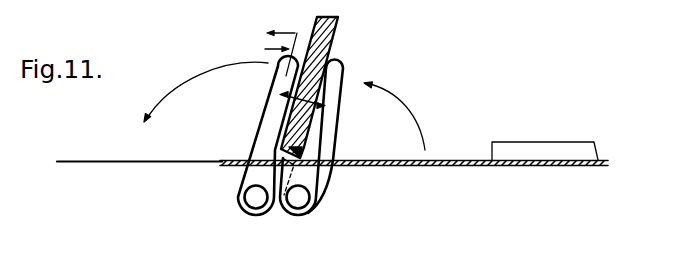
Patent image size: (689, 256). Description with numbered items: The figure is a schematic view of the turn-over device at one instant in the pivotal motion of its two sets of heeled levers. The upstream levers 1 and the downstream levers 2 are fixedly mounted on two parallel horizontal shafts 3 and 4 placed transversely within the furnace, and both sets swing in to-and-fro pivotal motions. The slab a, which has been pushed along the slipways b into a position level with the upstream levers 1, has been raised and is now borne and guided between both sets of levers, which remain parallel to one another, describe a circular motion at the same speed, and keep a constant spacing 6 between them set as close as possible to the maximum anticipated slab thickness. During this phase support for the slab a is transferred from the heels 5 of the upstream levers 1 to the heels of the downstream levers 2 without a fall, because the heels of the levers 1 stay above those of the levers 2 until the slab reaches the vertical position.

The upstream levers 1 is at (326, 120).
The downstream levers 2 is at (277, 108).
The horizontal shaft 3 is at (300, 198).
The horizontal shaft 4 is at (257, 198).
The heels 5 is at (302, 141).
The spacing 6 is at (322, 105).
The slab a is at (329, 30).
The slipways b is at (472, 167).